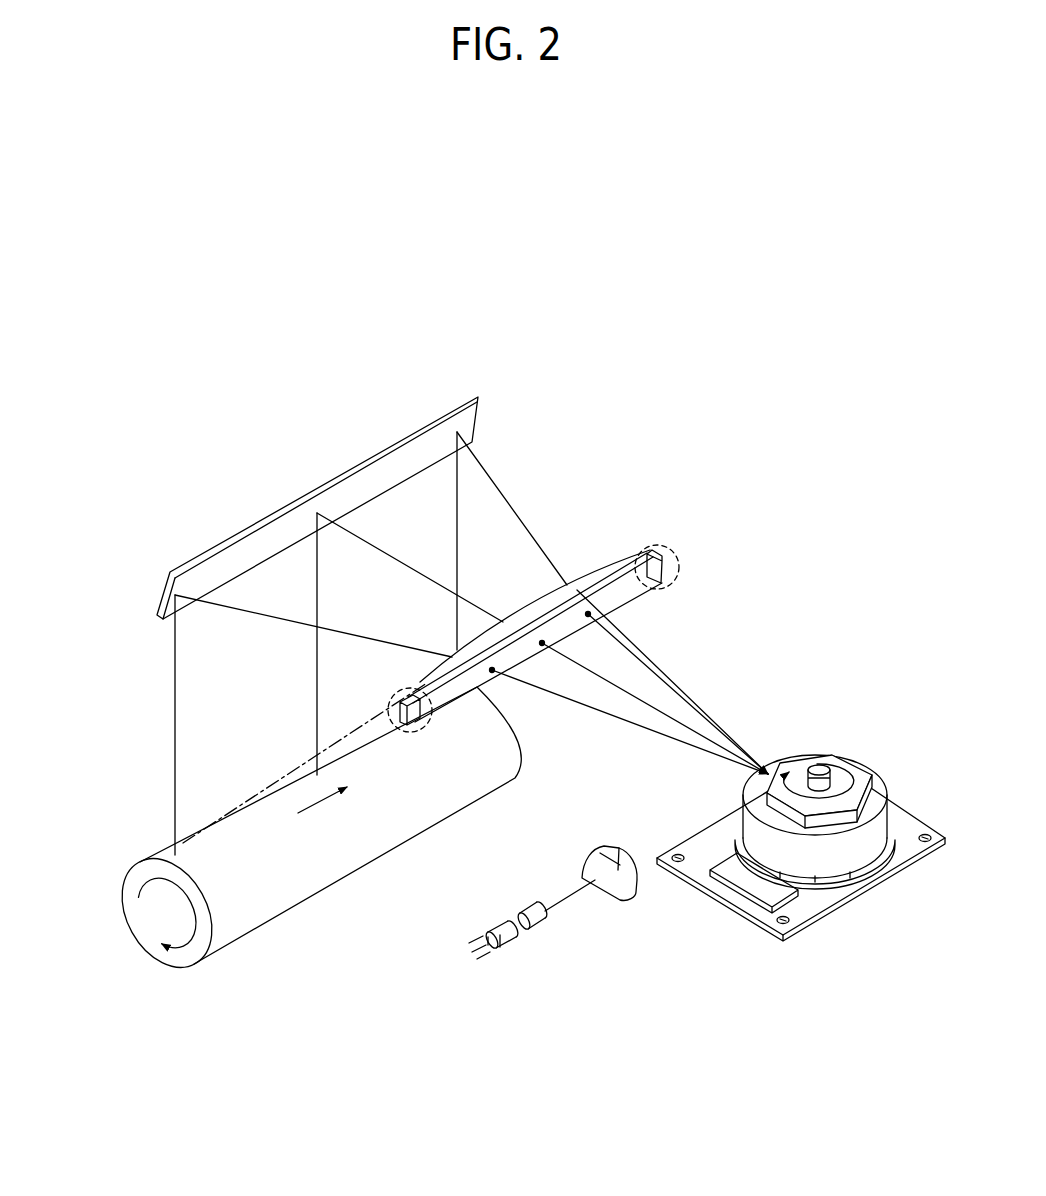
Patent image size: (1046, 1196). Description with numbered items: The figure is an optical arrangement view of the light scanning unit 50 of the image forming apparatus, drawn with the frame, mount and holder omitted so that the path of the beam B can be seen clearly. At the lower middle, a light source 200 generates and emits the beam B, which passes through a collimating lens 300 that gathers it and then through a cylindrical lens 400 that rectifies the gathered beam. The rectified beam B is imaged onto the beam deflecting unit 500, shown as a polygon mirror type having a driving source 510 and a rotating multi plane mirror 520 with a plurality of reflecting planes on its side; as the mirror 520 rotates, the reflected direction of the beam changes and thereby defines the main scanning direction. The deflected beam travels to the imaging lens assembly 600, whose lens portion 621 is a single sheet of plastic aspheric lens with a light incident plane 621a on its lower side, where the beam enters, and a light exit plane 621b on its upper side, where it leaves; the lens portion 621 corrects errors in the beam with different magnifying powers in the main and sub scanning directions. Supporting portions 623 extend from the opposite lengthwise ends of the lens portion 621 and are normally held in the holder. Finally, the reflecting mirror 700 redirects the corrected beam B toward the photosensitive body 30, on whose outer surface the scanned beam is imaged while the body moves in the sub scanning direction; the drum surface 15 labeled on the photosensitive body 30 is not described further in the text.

The photosensitive drum surface 15 is at (347, 868).
The photosensitive body 30 is at (150, 930).
The light scanning unit 50 is at (635, 442).
The light source 200 is at (507, 945).
The collimating lens 300 is at (542, 923).
The cylindrical lens 400 is at (630, 898).
The beam deflecting unit 500 is at (790, 955).
The driving source 510 is at (840, 855).
The rotating multi plane mirror 520 is at (855, 775).
The imaging lens assembly 600 is at (549, 616).
The lens portion 621 is at (558, 611).
The light incident plane 621a is at (622, 592).
The light exit plane 621b is at (530, 603).
The supporting portion 623 is at (388, 703).
The reflecting mirror 700 is at (243, 553).
The beam B is at (562, 900).